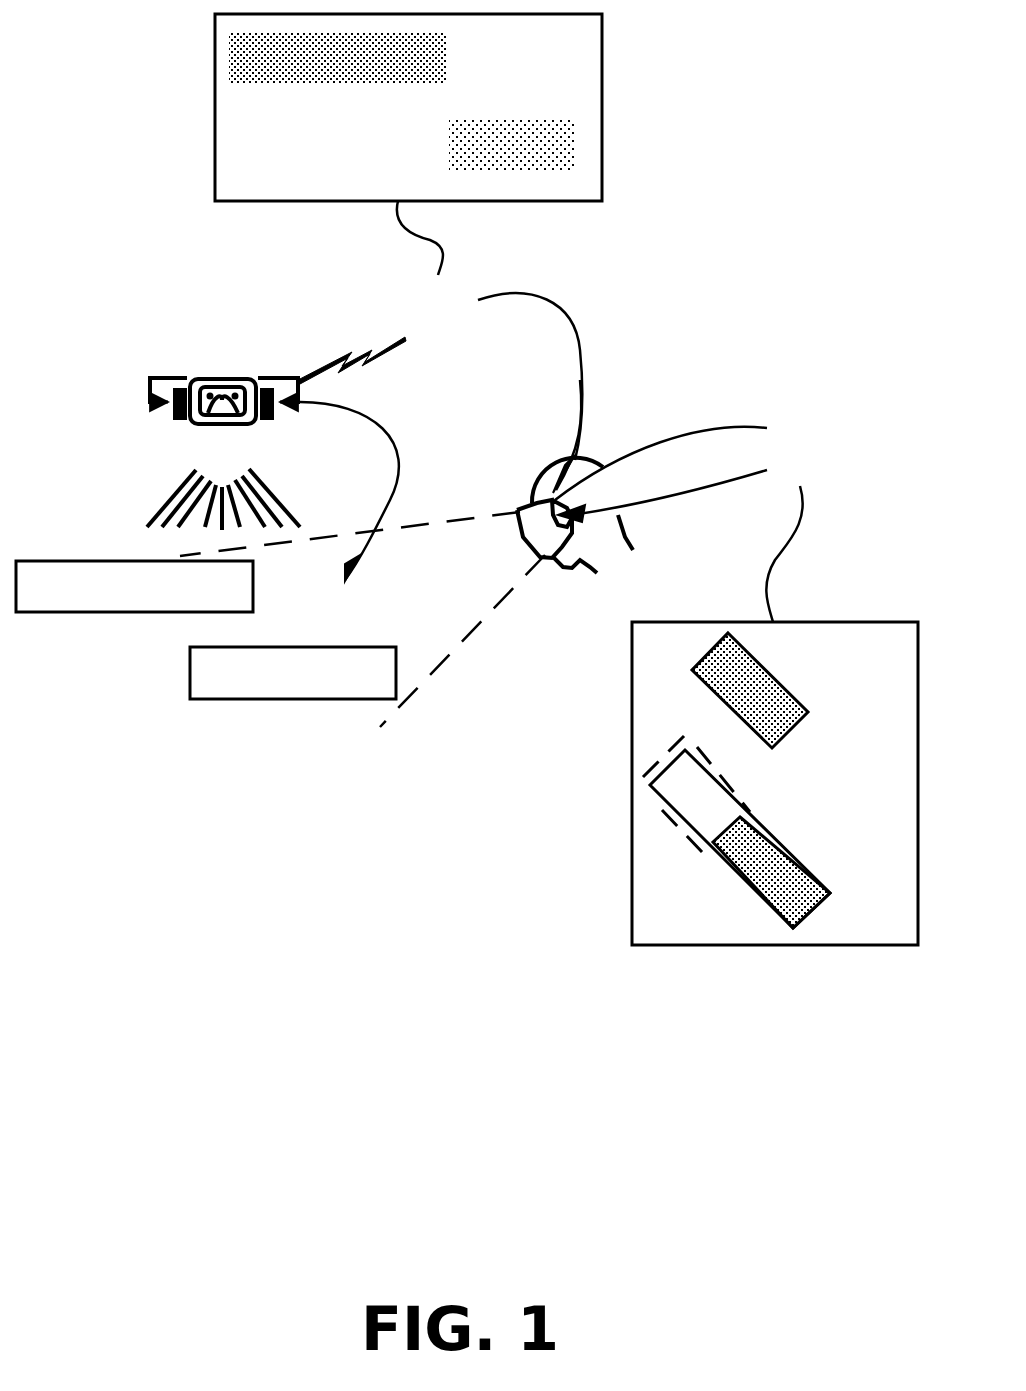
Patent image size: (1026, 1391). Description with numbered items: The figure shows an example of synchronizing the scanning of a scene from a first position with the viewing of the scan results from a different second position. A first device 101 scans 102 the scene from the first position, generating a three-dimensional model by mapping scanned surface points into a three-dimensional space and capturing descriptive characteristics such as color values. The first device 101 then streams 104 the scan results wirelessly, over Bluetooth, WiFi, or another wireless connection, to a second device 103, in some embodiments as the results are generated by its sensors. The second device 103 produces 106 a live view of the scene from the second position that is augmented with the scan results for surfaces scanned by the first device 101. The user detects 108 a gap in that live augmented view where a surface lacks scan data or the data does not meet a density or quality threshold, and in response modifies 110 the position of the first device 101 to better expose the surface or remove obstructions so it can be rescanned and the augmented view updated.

The first device 101 is at (228, 378).
The scanning step 102 is at (223, 470).
The second device 103 is at (516, 510).
The streaming step 104 is at (490, 347).
The producing step 106 is at (736, 677).
The gap detection step 108 is at (650, 800).
The position modification step 110 is at (268, 550).